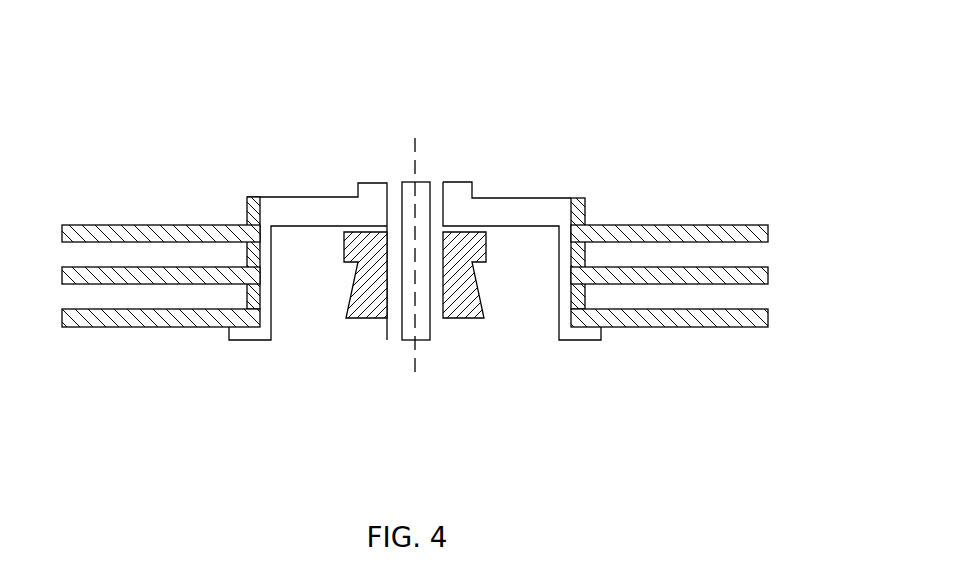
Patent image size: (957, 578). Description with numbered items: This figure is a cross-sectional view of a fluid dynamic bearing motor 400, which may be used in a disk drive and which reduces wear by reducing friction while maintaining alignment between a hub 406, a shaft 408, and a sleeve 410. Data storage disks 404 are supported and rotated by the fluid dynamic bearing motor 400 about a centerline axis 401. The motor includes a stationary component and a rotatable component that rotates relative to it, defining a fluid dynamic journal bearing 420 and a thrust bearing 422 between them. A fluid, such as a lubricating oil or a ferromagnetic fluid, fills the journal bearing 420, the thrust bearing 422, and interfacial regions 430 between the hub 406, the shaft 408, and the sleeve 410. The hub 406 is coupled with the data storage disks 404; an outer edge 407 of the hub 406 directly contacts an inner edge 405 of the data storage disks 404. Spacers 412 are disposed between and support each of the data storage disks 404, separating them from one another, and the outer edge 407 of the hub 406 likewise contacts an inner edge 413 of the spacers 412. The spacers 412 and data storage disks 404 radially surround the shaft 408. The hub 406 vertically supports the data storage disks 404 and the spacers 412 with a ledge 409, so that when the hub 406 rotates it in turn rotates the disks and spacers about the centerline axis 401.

The fluid dynamic bearing motor 400 is at (177, 93).
The centerline axis 401 is at (413, 148).
The data storage disks 404 is at (720, 225).
The inner edge of the data storage disks 405 is at (570, 270).
The hub 406 is at (487, 197).
The outer edge of the hub 407 is at (580, 278).
The shaft 408 is at (402, 182).
The ledge 409 is at (592, 334).
The sleeve 410 is at (487, 252).
The spacers 412 is at (585, 205).
The inner edge of the spacers 413 is at (570, 252).
The fluid dynamic journal bearing 420 is at (392, 318).
The thrust bearing 422 is at (338, 231).
The interfacial regions 430 is at (436, 231).